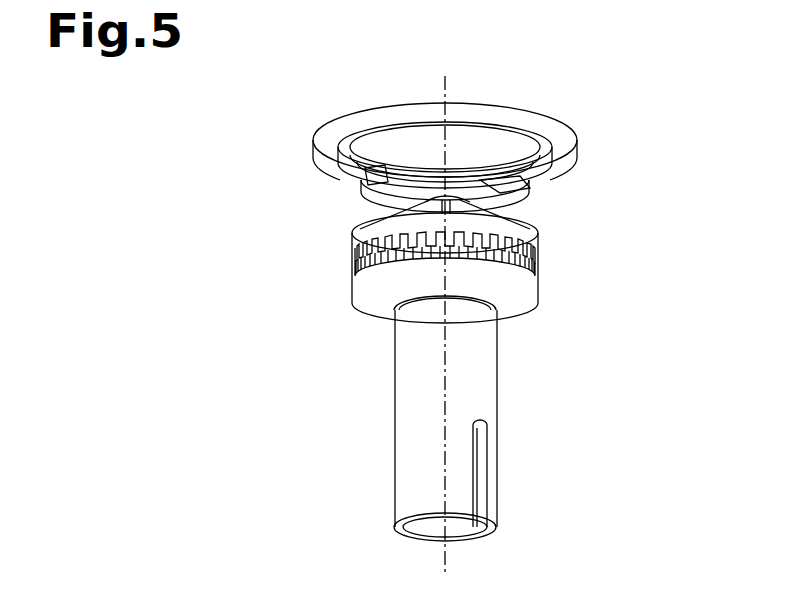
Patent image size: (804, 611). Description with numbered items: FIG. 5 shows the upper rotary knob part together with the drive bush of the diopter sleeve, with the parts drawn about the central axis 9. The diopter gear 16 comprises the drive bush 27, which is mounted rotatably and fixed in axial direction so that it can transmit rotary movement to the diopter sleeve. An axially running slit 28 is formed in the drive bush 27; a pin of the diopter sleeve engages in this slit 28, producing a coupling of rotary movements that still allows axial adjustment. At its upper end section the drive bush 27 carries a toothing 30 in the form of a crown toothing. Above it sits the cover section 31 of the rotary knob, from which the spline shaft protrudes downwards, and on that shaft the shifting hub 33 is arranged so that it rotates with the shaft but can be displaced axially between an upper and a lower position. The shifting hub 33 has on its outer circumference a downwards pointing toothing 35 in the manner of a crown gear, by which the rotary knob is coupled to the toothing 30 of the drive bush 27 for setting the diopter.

The axis of rotation 9 is at (445, 77).
The diopter gear 16 is at (316, 262).
The drive bush 27 is at (510, 391).
The slit 28 is at (500, 500).
The toothing 30 is at (342, 271).
The cover section 31 is at (605, 122).
The shifting hub 33 is at (343, 237).
The toothing 35 is at (548, 268).